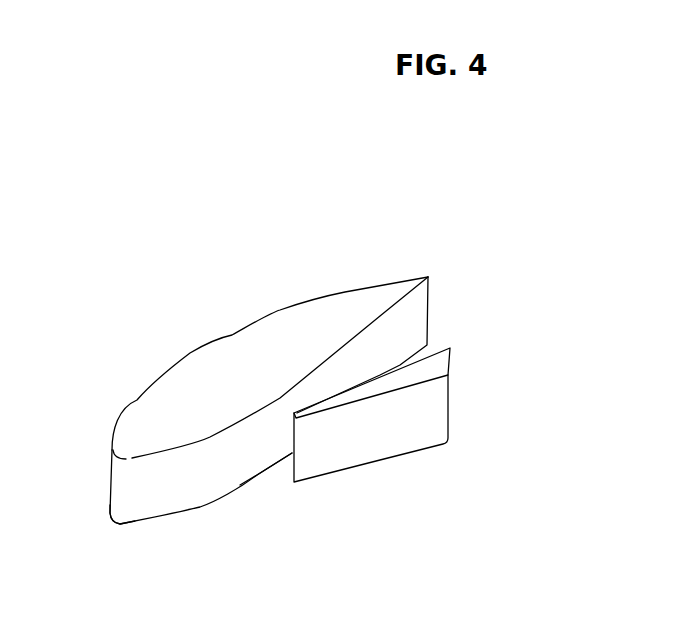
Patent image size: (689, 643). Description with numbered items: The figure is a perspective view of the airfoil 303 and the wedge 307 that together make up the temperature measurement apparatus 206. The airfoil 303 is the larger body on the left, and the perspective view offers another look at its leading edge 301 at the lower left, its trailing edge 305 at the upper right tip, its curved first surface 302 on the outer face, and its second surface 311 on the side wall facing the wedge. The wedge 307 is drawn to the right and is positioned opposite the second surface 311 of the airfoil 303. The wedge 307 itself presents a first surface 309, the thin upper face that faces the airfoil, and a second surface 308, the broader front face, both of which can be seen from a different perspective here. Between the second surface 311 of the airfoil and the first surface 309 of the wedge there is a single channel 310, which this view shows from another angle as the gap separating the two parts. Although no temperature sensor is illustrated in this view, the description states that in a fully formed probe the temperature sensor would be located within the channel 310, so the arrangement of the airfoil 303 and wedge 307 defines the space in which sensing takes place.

The temperature measurement apparatus 206 is at (193, 185).
The leading edge 301 is at (108, 527).
The first surface 302 is at (132, 405).
The airfoil 303 is at (233, 363).
The trailing edge 305 is at (430, 277).
The wedge 307 is at (437, 366).
The second surface 308 is at (376, 424).
The first surface 309 is at (405, 368).
The single channel 310 is at (278, 478).
The second surface 311 is at (172, 487).